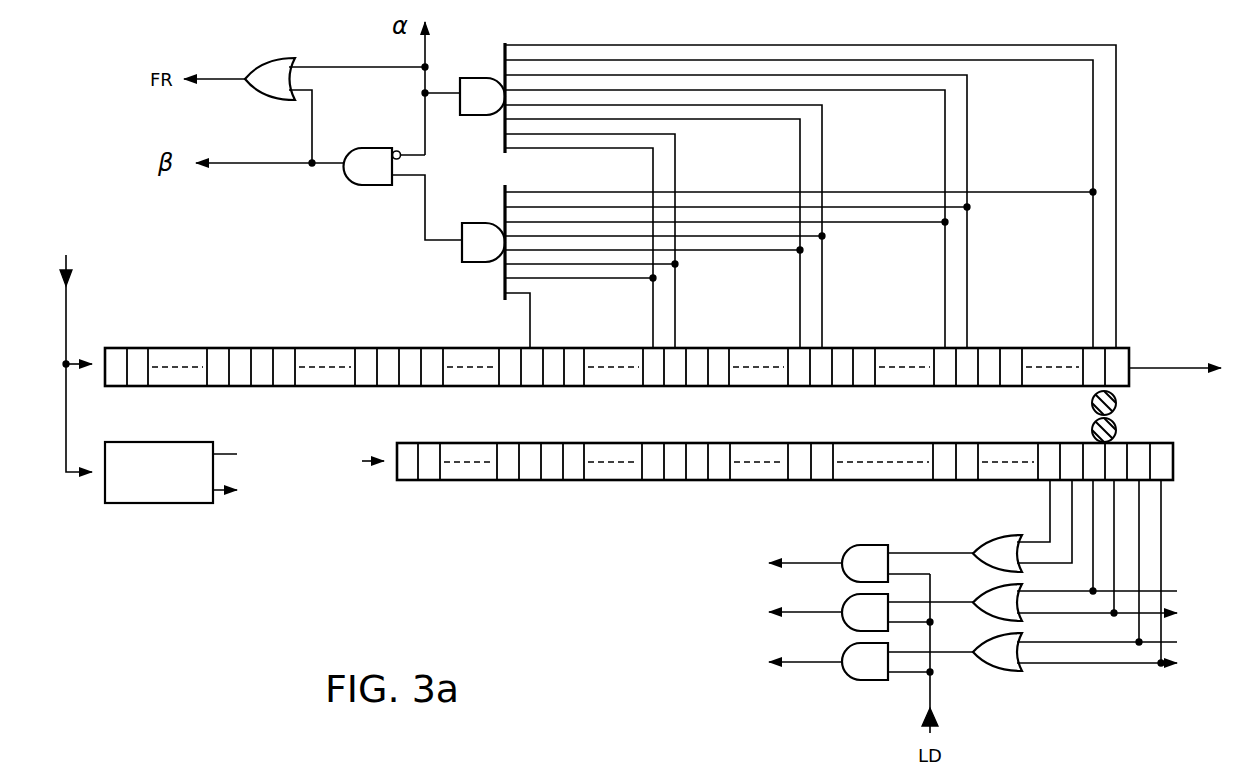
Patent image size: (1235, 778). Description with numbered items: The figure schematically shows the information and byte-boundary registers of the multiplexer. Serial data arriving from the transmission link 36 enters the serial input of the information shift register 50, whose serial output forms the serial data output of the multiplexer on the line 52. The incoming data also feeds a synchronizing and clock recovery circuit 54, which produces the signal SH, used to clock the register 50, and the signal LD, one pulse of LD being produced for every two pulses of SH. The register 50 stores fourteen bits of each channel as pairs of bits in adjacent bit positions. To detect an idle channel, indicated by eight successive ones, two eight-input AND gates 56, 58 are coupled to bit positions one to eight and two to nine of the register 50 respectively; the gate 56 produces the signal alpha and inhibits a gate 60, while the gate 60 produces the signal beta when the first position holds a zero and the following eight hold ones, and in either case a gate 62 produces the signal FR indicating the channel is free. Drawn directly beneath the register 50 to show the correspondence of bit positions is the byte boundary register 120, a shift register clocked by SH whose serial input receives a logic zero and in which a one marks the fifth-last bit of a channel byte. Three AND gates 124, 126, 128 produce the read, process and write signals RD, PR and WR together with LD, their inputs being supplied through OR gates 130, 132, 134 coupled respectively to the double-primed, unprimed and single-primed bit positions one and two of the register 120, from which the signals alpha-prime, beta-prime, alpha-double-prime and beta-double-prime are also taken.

The transmission link 36 is at (67, 312).
The information shift register 50 is at (320, 347).
The line 52 is at (1160, 368).
The synchronizing and clock recovery circuit 54 is at (170, 503).
The 8-input AND gate 56 is at (480, 116).
The 8-input AND gate 58 is at (470, 262).
The gate 60 is at (345, 182).
The gate 62 is at (262, 58).
The byte boundary register 120 is at (612, 482).
The AND gate 124 is at (850, 545).
The AND gate 126 is at (848, 594).
The AND gate 128 is at (848, 643).
The OR gate 130 is at (988, 535).
The OR gate 132 is at (988, 586).
The OR gate 134 is at (988, 635).